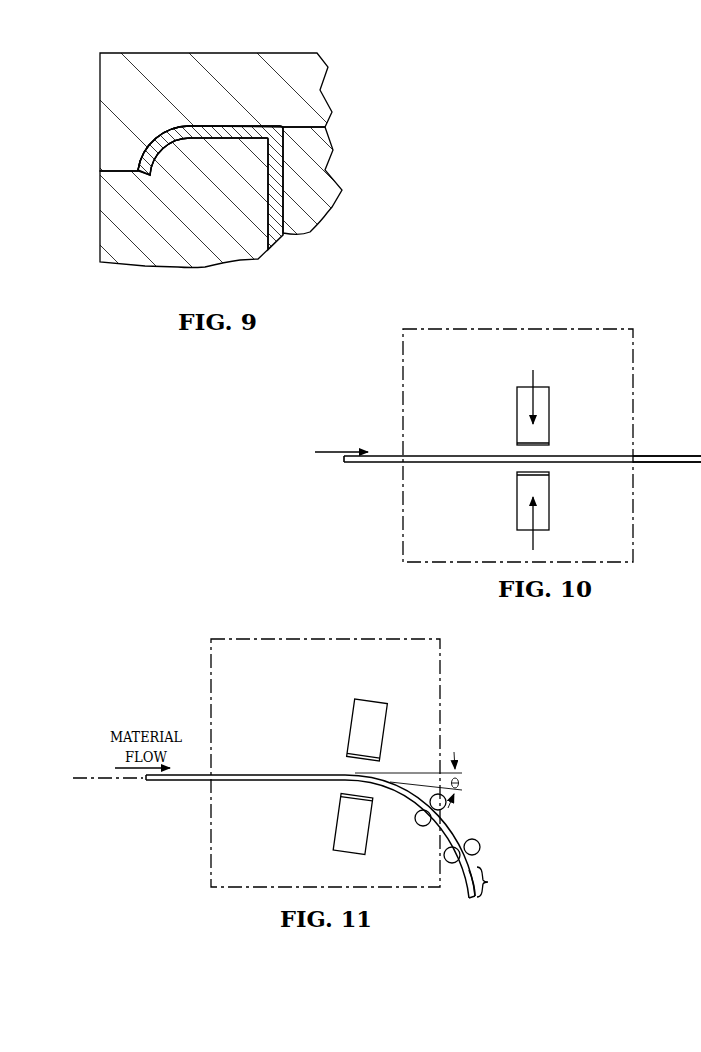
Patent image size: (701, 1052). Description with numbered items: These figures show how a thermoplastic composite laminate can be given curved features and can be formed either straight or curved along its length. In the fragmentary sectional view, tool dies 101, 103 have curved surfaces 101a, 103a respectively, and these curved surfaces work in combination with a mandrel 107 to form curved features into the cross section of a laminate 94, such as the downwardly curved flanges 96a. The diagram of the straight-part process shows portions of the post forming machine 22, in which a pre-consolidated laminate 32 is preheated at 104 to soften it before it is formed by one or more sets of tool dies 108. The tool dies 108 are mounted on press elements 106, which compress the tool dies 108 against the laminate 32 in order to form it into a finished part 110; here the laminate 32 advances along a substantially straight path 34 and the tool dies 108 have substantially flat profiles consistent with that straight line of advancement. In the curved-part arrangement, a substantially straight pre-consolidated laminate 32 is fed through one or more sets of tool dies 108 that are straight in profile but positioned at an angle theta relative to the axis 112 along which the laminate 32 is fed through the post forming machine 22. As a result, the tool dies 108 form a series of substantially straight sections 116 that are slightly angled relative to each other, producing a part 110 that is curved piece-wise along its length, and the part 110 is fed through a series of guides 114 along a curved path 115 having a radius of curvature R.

In FIG. 10, the post forming machine 22 is at (427, 340).
In FIG. 11, the post forming machine 22 is at (233, 649).
In FIG. 10, the pre-consolidated laminate 32 is at (370, 464).
In FIG. 11, the pre-consolidated laminate 32 is at (170, 781).
In FIG. 10, the substantially straight path 34 is at (330, 455).
In FIG. 9, the laminate 94 is at (296, 235).
In FIG. 9, the downwardly curved flanges 96a is at (155, 128).
In FIG. 9, the tool die 101 is at (137, 245).
In FIG. 9, the curved surface 101a is at (177, 160).
In FIG. 9, the tool die 103 is at (183, 80).
In FIG. 9, the curved surface 103a is at (165, 108).
In FIG. 10, the preheating 104 is at (447, 428).
In FIG. 11, the preheating 104 is at (260, 745).
In FIG. 10, the press elements 106 is at (540, 402).
In FIG. 11, the press elements 106 is at (373, 727).
In FIG. 9, the mandrel 107 is at (305, 222).
In FIG. 10, the tool dies 108 is at (549, 473).
In FIG. 11, the tool dies 108 is at (380, 762).
In FIG. 10, the finished part 110 is at (672, 457).
In FIG. 11, the finished part 110 is at (474, 898).
In FIG. 11, the axis 112 is at (80, 777).
In FIG. 11, the guides 114 is at (448, 803).
In FIG. 11, the curved path 115 is at (461, 823).
In FIG. 11, the substantially straight sections 116 is at (497, 882).
In FIG. 11, the radius of curvature R is at (441, 834).